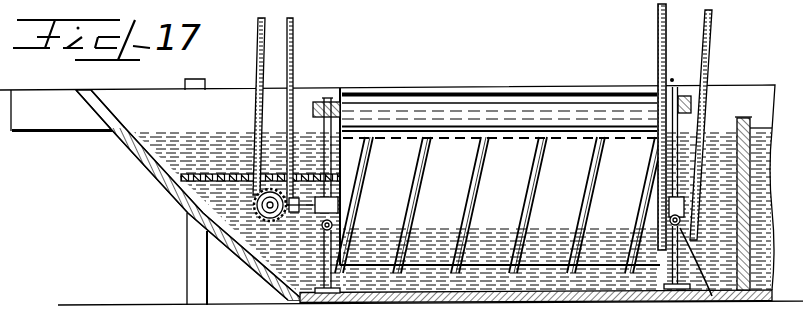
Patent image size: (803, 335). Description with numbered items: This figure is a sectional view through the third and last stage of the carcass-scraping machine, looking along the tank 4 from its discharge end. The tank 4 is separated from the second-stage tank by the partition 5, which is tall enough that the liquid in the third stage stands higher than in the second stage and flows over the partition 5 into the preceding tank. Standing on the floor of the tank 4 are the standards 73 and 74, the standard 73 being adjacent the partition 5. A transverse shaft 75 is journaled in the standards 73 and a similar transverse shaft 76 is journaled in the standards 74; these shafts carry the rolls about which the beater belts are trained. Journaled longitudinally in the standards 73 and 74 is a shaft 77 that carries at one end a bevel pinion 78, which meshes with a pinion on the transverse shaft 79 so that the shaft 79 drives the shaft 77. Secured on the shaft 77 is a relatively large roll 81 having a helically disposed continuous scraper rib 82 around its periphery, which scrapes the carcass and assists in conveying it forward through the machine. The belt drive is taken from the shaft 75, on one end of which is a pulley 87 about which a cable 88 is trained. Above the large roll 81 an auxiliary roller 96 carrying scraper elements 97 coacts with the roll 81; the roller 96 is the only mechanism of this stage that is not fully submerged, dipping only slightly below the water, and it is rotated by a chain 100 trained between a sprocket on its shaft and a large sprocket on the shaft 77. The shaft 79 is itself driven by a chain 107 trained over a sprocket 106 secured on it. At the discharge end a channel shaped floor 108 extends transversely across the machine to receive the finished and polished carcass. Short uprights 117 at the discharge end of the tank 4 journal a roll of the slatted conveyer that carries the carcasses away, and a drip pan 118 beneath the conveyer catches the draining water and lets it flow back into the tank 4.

The tank 4 is at (577, 302).
The partition 5 is at (752, 126).
The standard 73 is at (668, 290).
The standard 74 is at (338, 283).
The shaft 75 is at (658, 218).
The transverse shaft 76 is at (340, 240).
The shaft 77 is at (340, 186).
The bevel pinion 78 is at (340, 213).
The shaft 79 is at (267, 222).
The roll 81 is at (500, 255).
The scraper rib 82 is at (470, 233).
The pulley 87 is at (708, 281).
The cable 88 is at (710, 50).
The roller 96 is at (499, 117).
The scraper element 97 is at (579, 97).
The chain 100 is at (655, 117).
The sprocket 106 is at (262, 216).
The chain 107 is at (293, 68).
The channel shaped floor 108 is at (217, 174).
The short upright 117 is at (188, 214).
The drip pan 118 is at (83, 133).